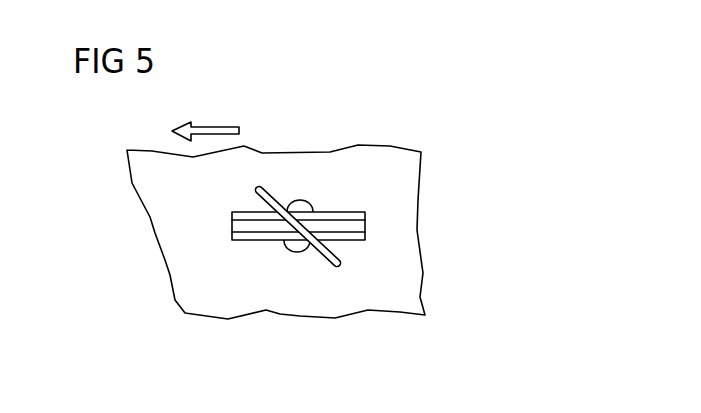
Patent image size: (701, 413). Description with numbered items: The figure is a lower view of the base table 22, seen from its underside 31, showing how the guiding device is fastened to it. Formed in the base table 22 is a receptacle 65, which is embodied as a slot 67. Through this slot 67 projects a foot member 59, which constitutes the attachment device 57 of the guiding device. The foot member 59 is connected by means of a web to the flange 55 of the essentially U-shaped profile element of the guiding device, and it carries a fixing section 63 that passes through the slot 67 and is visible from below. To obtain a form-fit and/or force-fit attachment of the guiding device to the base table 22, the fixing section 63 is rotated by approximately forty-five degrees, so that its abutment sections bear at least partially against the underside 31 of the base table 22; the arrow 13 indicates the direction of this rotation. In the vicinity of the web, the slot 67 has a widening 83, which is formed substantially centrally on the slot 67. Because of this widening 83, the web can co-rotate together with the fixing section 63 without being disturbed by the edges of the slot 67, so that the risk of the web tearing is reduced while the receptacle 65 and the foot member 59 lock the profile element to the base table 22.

The direction of movement 13 is at (213, 128).
The base table 22 is at (130, 172).
The underside 31 is at (211, 204).
The flange 55 is at (345, 220).
The attachment device 57 is at (294, 172).
The foot member 59 is at (326, 191).
The fixing section 63 is at (340, 259).
The receptacle 65 is at (240, 241).
The slot 67 is at (272, 256).
The widening 83 is at (305, 253).